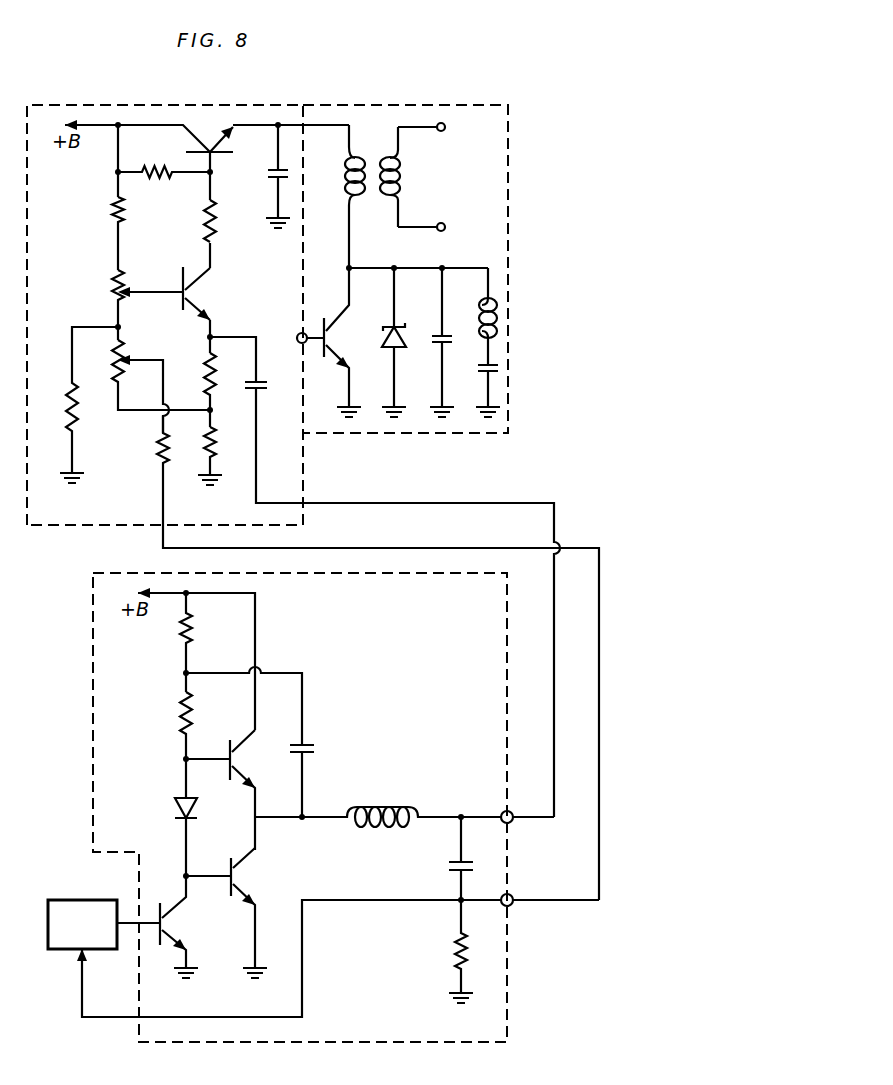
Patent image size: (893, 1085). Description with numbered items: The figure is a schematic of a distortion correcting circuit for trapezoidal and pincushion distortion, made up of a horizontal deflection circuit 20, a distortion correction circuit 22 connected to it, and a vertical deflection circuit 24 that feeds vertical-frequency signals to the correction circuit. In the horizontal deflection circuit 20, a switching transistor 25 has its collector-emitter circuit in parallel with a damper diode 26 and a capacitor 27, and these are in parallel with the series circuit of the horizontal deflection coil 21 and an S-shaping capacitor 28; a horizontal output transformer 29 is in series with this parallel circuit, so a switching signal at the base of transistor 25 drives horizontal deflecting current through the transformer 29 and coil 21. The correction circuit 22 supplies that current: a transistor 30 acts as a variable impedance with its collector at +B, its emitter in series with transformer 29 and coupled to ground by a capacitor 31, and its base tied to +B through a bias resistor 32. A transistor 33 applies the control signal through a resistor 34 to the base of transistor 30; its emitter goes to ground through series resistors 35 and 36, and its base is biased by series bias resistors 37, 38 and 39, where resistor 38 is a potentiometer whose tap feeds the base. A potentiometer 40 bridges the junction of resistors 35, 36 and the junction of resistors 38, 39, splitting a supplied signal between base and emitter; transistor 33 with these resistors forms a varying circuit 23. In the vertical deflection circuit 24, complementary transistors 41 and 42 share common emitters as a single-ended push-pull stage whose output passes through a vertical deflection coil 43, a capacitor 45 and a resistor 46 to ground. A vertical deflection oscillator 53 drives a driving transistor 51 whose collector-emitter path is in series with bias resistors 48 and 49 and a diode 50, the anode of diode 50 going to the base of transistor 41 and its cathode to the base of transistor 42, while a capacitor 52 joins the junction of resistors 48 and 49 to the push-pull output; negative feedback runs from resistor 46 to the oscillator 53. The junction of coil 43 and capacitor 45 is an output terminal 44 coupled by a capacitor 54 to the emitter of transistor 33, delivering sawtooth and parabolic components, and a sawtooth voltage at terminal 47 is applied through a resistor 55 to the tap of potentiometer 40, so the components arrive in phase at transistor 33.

The horizontal deflection circuit 20 is at (508, 280).
The horizontal deflection coil 21 is at (497, 319).
The distortion correction circuit 22 is at (303, 495).
The varying circuit 23 is at (114, 432).
The vertical deflection circuit 24 is at (93, 750).
The switching transistor 25 is at (325, 317).
The damper diode 26 is at (391, 328).
The capacitor 27 is at (437, 335).
The S-shaping capacitor 28 is at (487, 365).
The horizontal output transformer 29 is at (377, 185).
The transistor 30 is at (223, 160).
The capacitor 31 is at (268, 172).
The bias resistor 32 is at (147, 176).
The transistor 33 is at (181, 285).
The resistor 34 is at (212, 225).
The resistor 35 is at (207, 370).
The resistor 36 is at (233, 440).
The bias resistor 37 is at (112, 212).
The bias resistor 38 is at (112, 292).
The bias resistor 39 is at (66, 393).
The resistor 40 is at (114, 362).
The transistor 41 is at (229, 748).
The transistor 42 is at (230, 862).
The vertical deflection coil 43 is at (382, 806).
The output terminal 44 is at (500, 812).
The capacitor 45 is at (448, 864).
The resistor 46 is at (455, 950).
The terminal 47 is at (514, 897).
The bias resistor 48 is at (179, 633).
The bias resistor 49 is at (180, 710).
The diode 50 is at (185, 800).
The SEPP driving transistor 51 is at (160, 905).
The capacitor 52 is at (312, 747).
The vertical deflection oscillator 53 is at (62, 905).
The capacitor 54 is at (268, 389).
The resistor 55 is at (156, 456).